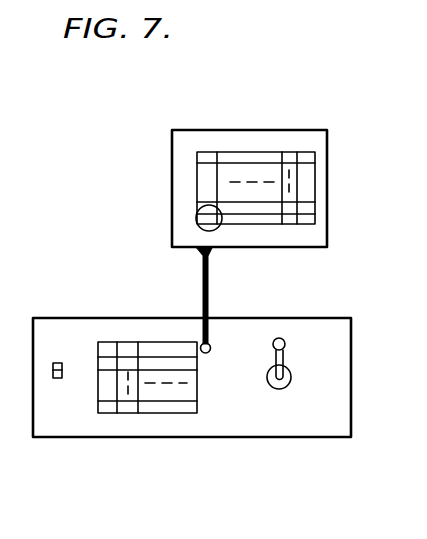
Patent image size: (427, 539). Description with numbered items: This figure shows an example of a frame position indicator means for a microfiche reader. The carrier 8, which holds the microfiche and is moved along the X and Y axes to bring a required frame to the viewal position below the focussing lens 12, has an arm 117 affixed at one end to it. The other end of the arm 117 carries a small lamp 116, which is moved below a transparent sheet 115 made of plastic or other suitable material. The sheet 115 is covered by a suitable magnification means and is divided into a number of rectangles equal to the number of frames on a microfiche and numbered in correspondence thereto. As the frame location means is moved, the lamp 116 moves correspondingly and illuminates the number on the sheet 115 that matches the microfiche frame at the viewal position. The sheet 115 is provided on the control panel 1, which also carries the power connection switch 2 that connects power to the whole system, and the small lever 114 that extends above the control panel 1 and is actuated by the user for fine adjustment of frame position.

The control panel 1 is at (245, 412).
The power connection switch 2 is at (56, 380).
The carrier 8 is at (305, 232).
The focussing lens 12 is at (196, 205).
The lever 114 is at (286, 356).
The transparent sheet 115 is at (163, 412).
The lamp 116 is at (202, 343).
The arm 117 is at (203, 280).